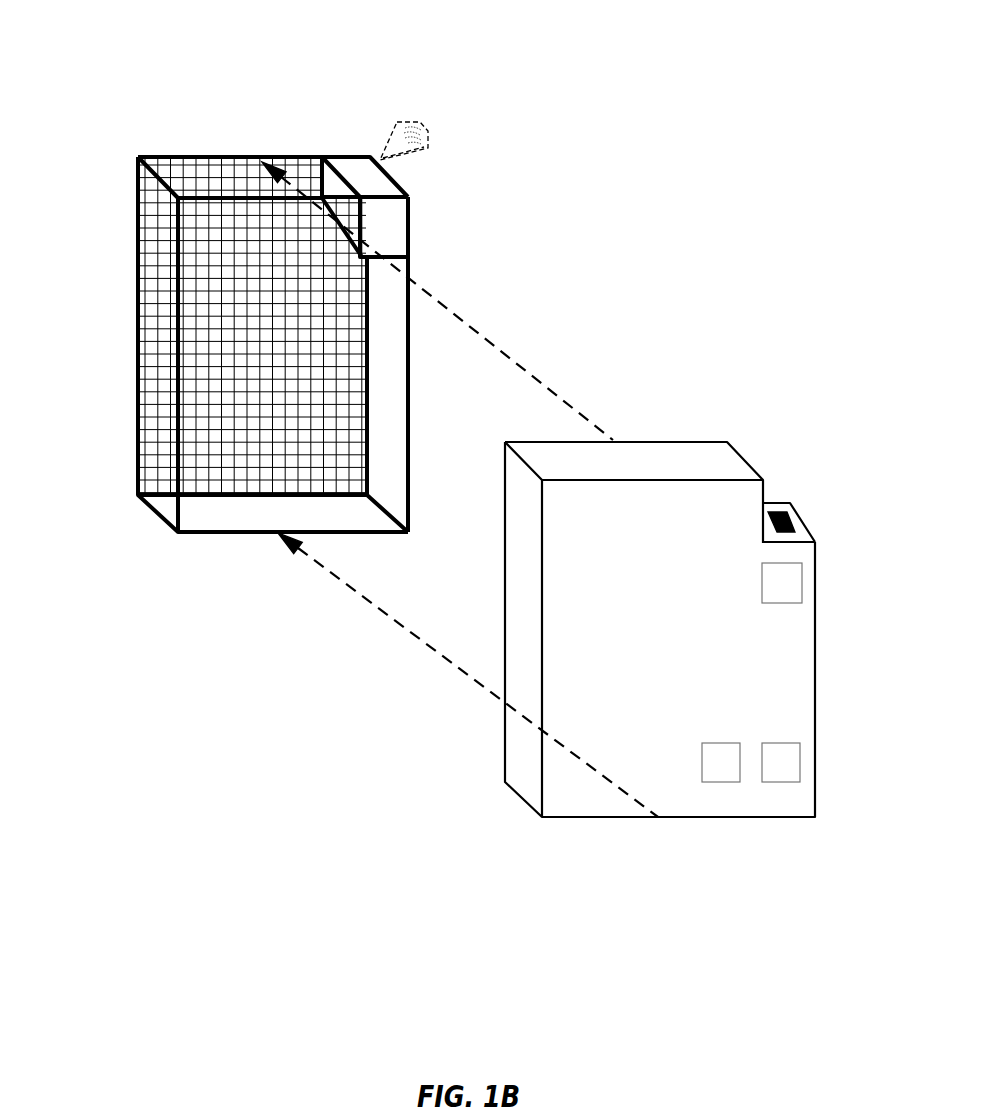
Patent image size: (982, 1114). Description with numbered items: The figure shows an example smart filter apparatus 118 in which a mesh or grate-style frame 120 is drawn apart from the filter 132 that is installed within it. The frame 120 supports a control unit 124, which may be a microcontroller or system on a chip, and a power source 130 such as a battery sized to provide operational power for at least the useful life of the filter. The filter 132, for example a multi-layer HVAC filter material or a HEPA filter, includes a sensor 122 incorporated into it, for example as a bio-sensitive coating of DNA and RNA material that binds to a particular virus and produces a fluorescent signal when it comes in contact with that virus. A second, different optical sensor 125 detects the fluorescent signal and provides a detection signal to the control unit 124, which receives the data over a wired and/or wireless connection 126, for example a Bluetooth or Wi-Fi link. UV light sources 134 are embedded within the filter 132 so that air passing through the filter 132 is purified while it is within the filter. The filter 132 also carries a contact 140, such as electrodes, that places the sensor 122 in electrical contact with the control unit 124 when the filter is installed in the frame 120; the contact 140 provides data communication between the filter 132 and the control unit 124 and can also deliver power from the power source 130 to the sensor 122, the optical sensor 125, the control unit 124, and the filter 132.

The smart filter apparatus 118 is at (217, 73).
The frame 120 is at (137, 155).
The sensor 122 is at (615, 537).
The control unit 124 is at (372, 178).
The optical sensor 125 is at (782, 590).
The wired and/or wireless connection 126 is at (427, 122).
The power source 130 is at (410, 224).
The filter 132 is at (685, 460).
The UV light sources 134 is at (720, 782).
The contact 140 is at (788, 510).